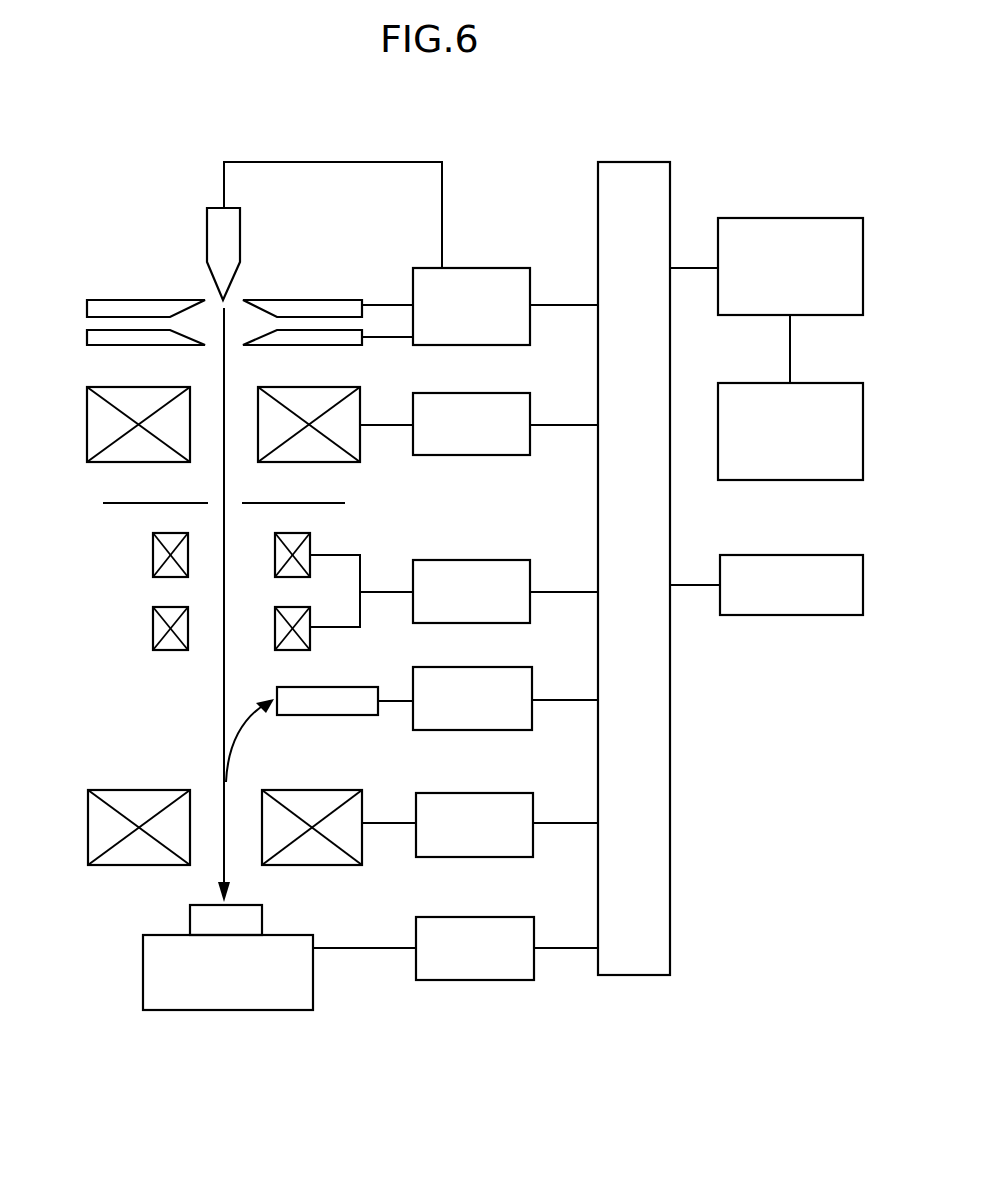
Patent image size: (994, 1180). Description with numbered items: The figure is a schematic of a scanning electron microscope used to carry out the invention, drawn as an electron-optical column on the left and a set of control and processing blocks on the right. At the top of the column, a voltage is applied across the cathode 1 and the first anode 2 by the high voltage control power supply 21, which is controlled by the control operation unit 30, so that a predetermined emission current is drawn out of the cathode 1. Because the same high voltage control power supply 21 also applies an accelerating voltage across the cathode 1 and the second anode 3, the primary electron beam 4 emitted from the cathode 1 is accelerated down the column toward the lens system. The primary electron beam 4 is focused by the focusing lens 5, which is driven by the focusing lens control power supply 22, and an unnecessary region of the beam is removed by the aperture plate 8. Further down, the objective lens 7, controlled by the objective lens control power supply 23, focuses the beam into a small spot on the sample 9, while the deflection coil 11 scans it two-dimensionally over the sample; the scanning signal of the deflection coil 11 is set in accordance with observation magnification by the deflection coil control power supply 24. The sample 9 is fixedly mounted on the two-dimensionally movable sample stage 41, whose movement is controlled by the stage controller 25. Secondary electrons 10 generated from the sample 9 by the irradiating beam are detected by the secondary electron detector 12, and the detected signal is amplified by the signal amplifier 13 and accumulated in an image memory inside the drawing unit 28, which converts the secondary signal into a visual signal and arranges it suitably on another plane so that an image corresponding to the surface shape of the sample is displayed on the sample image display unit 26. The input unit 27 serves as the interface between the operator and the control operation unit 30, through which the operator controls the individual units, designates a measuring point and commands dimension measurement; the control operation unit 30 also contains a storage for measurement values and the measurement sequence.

The cathode 1 is at (207, 237).
The first anode 2 is at (110, 300).
The second anode 3 is at (87, 335).
The primary electron beam 4 is at (222, 375).
The focusing lens 5 is at (87, 425).
The objective lens 7 is at (125, 790).
The aperture plate 8 is at (115, 503).
The sample 9 is at (190, 918).
The secondary electrons 10 is at (245, 727).
The deflection coil 11 is at (153, 632).
The secondary electron detector 12 is at (315, 687).
The signal amplifier 13 is at (483, 667).
The high voltage control power supply 21 is at (490, 268).
The focusing lens control power supply 22 is at (480, 393).
The objective lens control power supply 23 is at (483, 793).
The deflection coil control power supply 24 is at (480, 560).
The stage controller 25 is at (483, 917).
The sample image display unit 26 is at (760, 383).
The input unit 27 is at (765, 555).
The drawing unit 28 is at (765, 218).
The control operation unit 30 is at (632, 162).
The sample stage 41 is at (143, 975).